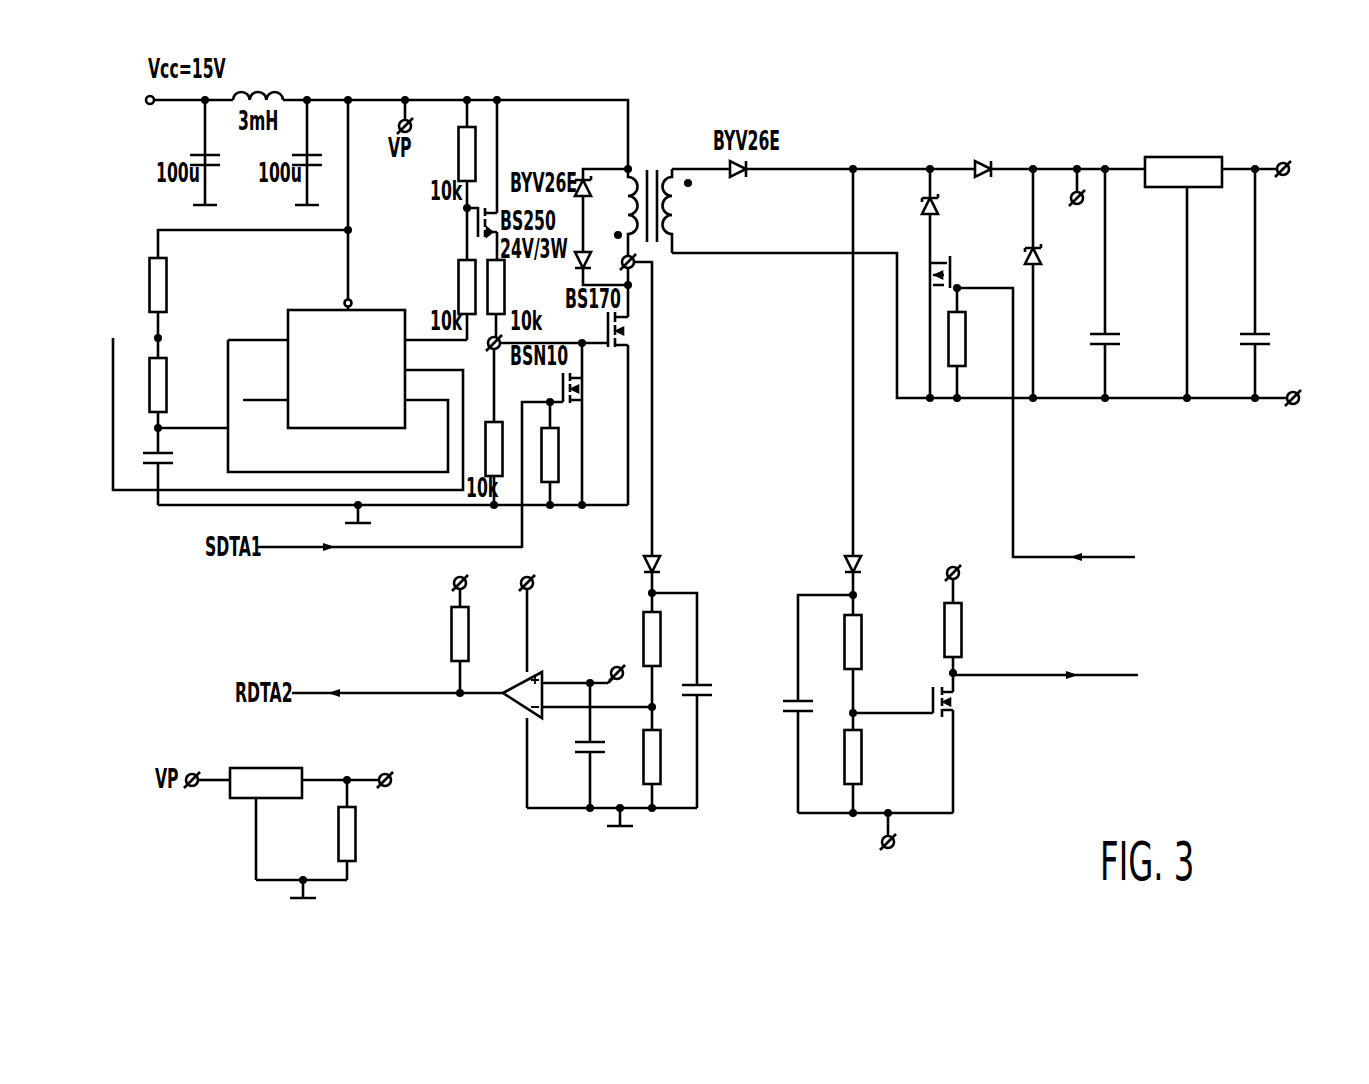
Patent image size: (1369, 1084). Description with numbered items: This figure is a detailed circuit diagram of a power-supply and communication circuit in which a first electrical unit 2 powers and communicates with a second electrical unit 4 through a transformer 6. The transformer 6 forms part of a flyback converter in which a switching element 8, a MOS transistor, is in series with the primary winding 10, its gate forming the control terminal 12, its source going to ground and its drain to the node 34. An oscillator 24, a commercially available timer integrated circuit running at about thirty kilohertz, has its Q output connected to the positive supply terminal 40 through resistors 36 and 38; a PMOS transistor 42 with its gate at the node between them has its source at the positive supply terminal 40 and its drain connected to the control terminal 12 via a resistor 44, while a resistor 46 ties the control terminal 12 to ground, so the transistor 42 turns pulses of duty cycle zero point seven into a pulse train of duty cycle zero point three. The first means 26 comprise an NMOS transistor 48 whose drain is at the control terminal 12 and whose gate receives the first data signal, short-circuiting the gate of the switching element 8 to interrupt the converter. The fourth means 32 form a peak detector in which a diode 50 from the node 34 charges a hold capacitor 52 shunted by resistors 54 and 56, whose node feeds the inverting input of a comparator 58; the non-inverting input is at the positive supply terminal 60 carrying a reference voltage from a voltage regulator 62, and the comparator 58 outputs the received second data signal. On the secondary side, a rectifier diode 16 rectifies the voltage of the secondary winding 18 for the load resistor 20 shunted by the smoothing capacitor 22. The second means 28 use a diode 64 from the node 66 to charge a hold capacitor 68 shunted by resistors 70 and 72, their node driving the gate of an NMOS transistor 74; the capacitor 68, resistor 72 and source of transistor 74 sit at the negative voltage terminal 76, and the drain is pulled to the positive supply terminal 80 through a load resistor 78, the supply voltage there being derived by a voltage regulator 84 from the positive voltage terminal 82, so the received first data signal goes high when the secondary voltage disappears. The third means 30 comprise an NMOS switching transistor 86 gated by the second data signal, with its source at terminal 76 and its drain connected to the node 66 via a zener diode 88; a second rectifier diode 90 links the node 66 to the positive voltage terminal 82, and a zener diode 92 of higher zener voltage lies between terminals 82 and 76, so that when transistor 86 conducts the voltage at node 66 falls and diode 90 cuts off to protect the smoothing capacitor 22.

The first electrical unit 2 is at (265, 817).
The second electrical unit 4 is at (1044, 502).
The transformer 6 is at (655, 178).
The switching element 8 is at (630, 330).
The primary winding 10 is at (630, 212).
The control terminal 12 is at (491, 350).
The rectifier diode 16 is at (746, 180).
The secondary winding 18 is at (680, 232).
The load resistor 20 is at (1194, 265).
The smoothing capacitor 22 is at (1098, 346).
The oscillator 24 is at (418, 464).
The first means 26 is at (567, 445).
The second means 28 is at (884, 674).
The third means 30 is at (1007, 346).
The fourth means 32 is at (557, 691).
The node 34 is at (622, 265).
The resistor 36 is at (459, 284).
The resistor 38 is at (459, 153).
The positive supply terminal 40 is at (399, 122).
The PMOS transistor 42 is at (478, 226).
The resistor 44 is at (500, 298).
The resistor 46 is at (497, 424).
The NMOS transistor 48 is at (575, 385).
The diode 50 is at (644, 562).
The hold capacitor 52 is at (700, 684).
The resistor 54 is at (657, 636).
The resistor 56 is at (657, 754).
The comparator 58 is at (516, 686).
The positive supply terminal 60 is at (466, 588).
The voltage regulator 62 is at (277, 777).
The diode 64 is at (845, 562).
The node 66 is at (855, 169).
The hold capacitor 68 is at (790, 706).
The resistor 70 is at (860, 638).
The resistor 72 is at (860, 753).
The NMOS transistor 74 is at (958, 720).
The negative voltage terminal 76 is at (1294, 406).
The load resistor 78 is at (962, 631).
The positive supply terminal 80 is at (1286, 178).
The positive voltage terminal 82 is at (1076, 206).
The voltage regulator 84 is at (1206, 187).
The NMOS switching transistor 86 is at (946, 266).
The zener diode 88 is at (940, 208).
The second rectifier diode 90 is at (978, 161).
The zener diode 92 is at (1042, 258).